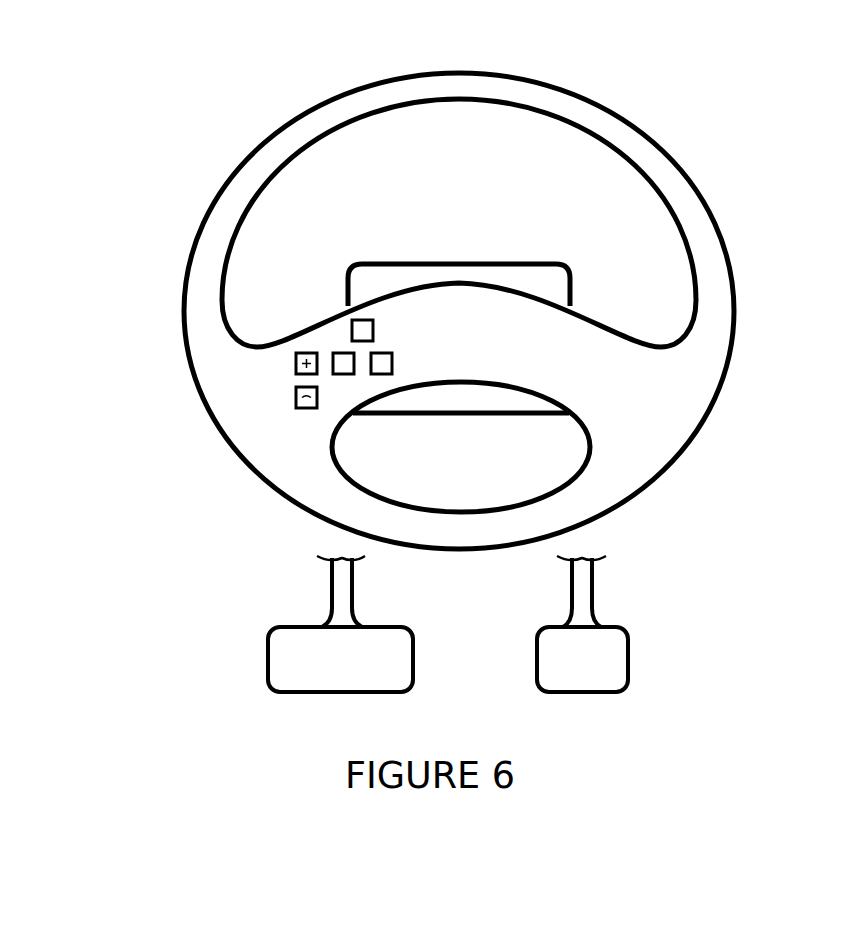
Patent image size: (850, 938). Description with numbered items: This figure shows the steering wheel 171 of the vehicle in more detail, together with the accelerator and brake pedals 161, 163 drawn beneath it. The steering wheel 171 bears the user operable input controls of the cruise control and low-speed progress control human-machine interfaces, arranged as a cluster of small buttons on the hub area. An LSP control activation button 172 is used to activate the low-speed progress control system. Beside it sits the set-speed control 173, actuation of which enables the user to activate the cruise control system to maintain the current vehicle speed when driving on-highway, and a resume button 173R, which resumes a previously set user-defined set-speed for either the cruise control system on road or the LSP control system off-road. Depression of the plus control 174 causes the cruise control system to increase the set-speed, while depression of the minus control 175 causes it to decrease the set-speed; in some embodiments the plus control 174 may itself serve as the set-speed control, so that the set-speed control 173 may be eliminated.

The steering wheel 171 is at (710, 262).
The LSP control activation button 172 is at (363, 320).
The set-speed control 173 is at (333, 355).
The resume button 173R is at (381, 375).
The '+' control 174 is at (296, 360).
The '−' control 175 is at (296, 402).
The accelerator pedal 161 is at (608, 653).
The brake pedal 163 is at (284, 654).